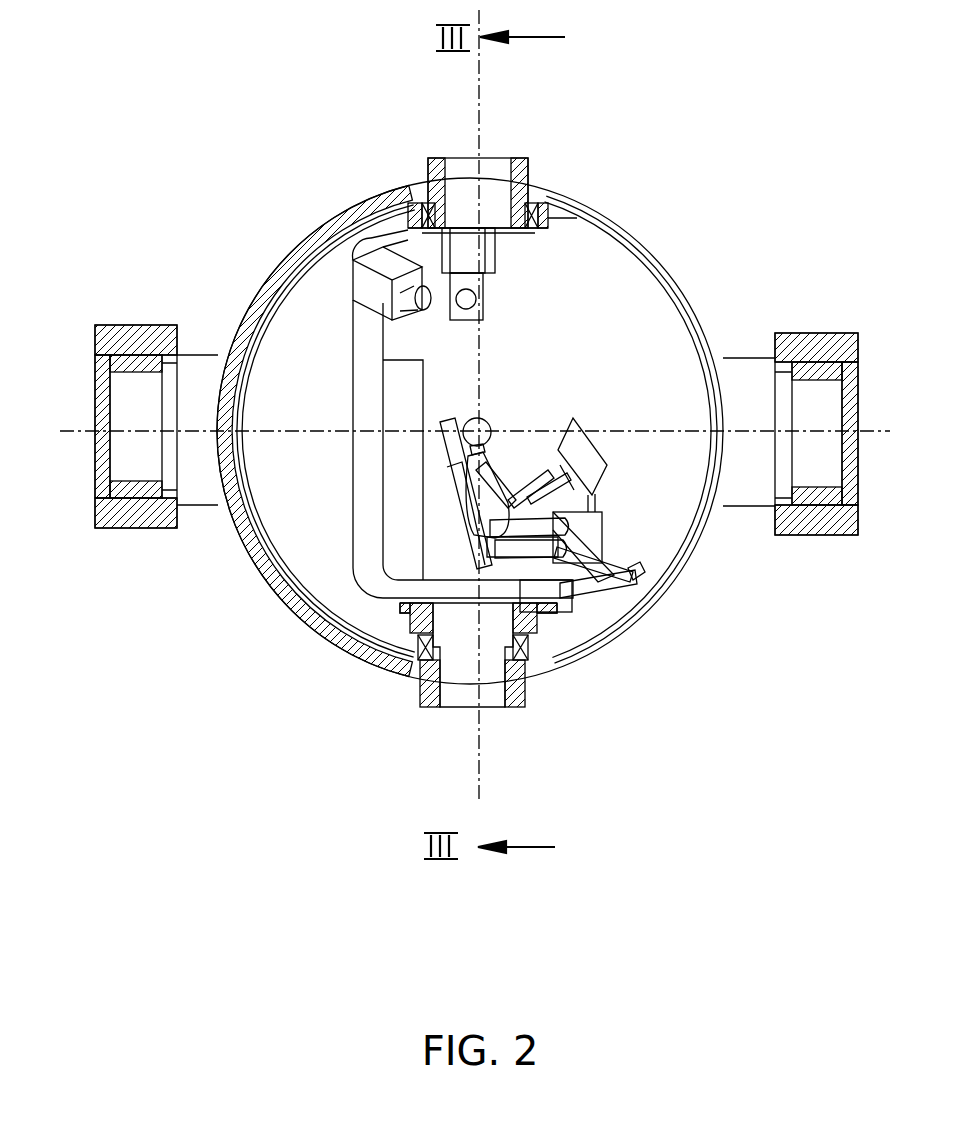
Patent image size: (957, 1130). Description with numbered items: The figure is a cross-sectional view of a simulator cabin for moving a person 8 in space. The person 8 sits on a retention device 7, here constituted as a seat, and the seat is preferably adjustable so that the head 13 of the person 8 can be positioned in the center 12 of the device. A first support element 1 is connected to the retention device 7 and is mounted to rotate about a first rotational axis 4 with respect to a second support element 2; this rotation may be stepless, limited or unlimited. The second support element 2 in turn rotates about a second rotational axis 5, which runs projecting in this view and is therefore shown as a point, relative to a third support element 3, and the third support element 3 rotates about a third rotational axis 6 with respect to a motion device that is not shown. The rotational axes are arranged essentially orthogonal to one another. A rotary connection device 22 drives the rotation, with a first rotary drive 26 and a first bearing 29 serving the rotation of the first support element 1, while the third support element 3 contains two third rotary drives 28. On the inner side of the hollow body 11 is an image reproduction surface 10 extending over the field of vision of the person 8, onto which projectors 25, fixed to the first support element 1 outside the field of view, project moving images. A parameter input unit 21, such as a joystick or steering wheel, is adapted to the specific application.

The first support element 1 is at (370, 555).
The second support element 2 is at (428, 675).
The third support element 3 is at (736, 376).
The first rotational axis 4 is at (484, 771).
The second rotational axis 5 is at (554, 432).
The third rotational axis 6 is at (128, 428).
The retention device 7 is at (528, 546).
The person 8 is at (485, 492).
The image reproduction surface 10 is at (638, 253).
The hollow body 11 is at (686, 302).
The center 12 is at (452, 422).
The head 13 is at (480, 418).
The parameter input unit 21 is at (592, 497).
The rotary connection device 22 is at (462, 172).
The projector 25 is at (458, 292).
The first rotary drive 26 is at (540, 205).
The third rotary drive 28 is at (140, 492).
The first bearing 29 is at (531, 660).